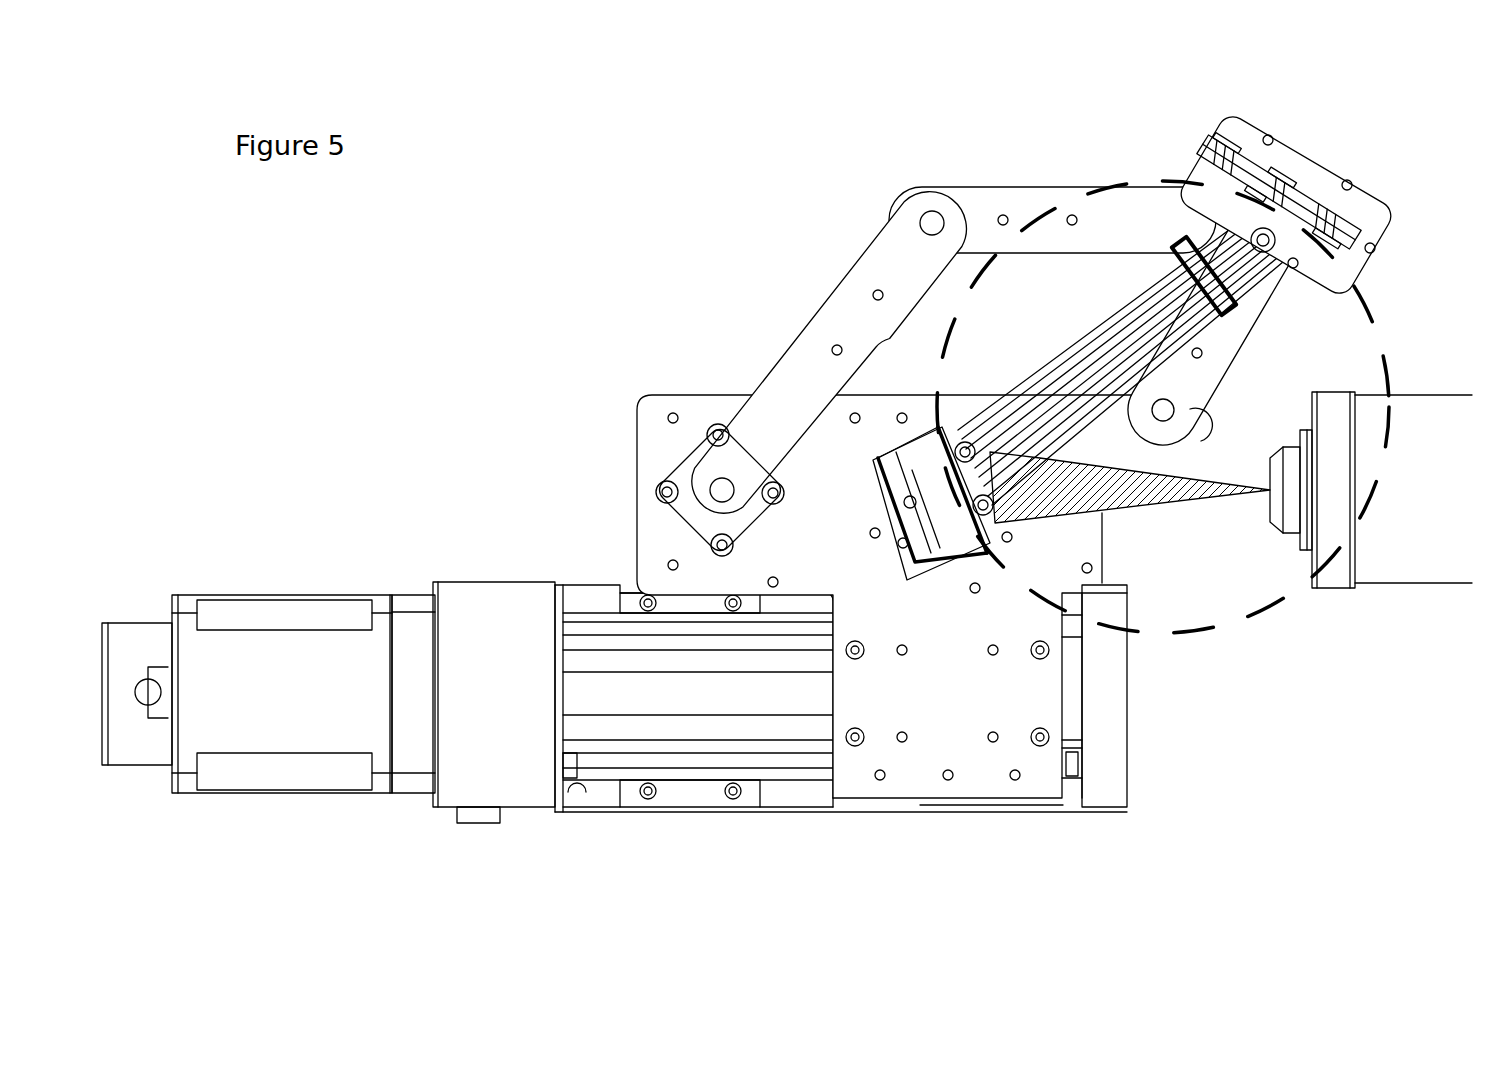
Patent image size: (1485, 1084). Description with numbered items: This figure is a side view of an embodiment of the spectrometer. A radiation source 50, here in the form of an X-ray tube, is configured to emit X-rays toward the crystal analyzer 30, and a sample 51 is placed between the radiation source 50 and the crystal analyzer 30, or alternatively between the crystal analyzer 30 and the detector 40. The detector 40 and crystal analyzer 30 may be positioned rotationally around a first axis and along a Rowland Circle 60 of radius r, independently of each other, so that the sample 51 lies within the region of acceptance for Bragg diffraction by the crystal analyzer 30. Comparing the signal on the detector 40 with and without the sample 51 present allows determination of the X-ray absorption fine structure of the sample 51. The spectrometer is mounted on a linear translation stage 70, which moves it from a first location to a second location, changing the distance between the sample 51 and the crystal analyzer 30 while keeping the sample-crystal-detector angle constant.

The crystal analyzer 30 is at (938, 513).
The detector 40 is at (1293, 197).
The radiation source 50 is at (1371, 490).
The sample 51 is at (1167, 238).
The Rowland Circle 60 is at (1220, 632).
The linear translation stage 70 is at (283, 597).